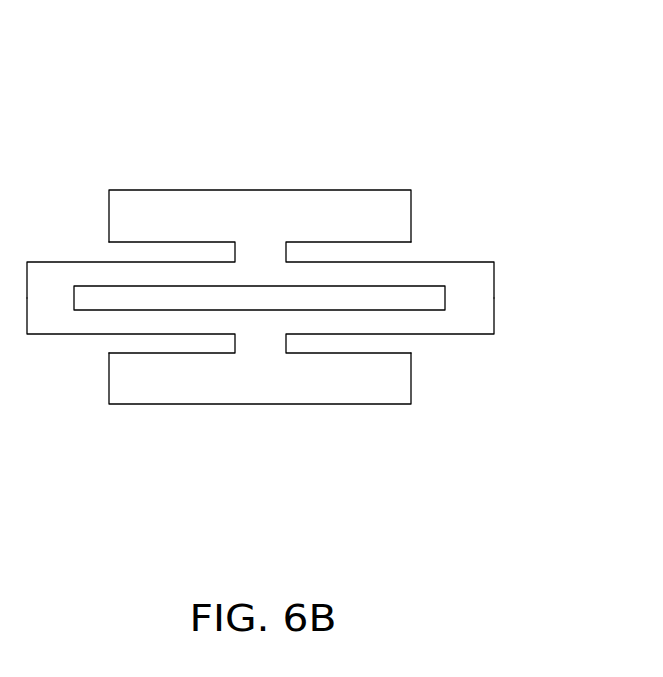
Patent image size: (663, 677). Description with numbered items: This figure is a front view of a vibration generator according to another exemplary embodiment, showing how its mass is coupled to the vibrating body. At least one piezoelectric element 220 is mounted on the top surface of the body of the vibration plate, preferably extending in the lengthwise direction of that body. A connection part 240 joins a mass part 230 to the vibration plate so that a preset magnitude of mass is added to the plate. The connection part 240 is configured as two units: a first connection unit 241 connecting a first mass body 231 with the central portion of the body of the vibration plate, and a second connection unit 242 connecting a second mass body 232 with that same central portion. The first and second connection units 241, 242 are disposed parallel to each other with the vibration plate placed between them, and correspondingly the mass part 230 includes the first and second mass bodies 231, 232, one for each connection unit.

The piezoelectric element 220 is at (409, 298).
The mass part 230 is at (260, 379).
The first mass body 231 is at (164, 224).
The second mass body 232 is at (215, 516).
The connection part 240 is at (260, 193).
The first connection unit 241 is at (261, 248).
The second connection unit 242 is at (257, 345).